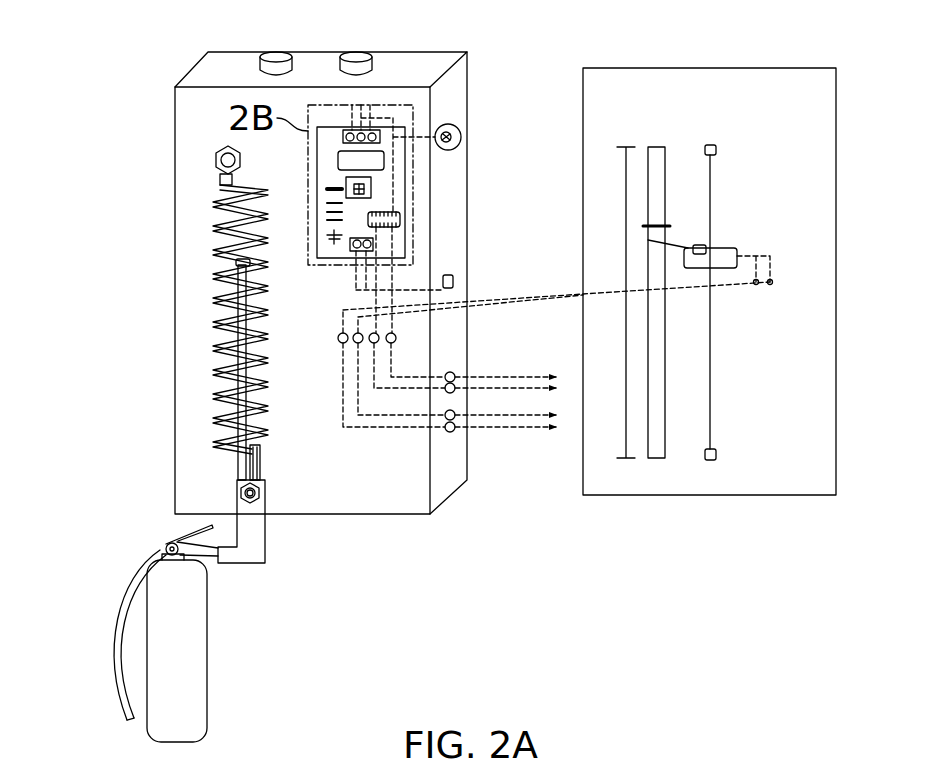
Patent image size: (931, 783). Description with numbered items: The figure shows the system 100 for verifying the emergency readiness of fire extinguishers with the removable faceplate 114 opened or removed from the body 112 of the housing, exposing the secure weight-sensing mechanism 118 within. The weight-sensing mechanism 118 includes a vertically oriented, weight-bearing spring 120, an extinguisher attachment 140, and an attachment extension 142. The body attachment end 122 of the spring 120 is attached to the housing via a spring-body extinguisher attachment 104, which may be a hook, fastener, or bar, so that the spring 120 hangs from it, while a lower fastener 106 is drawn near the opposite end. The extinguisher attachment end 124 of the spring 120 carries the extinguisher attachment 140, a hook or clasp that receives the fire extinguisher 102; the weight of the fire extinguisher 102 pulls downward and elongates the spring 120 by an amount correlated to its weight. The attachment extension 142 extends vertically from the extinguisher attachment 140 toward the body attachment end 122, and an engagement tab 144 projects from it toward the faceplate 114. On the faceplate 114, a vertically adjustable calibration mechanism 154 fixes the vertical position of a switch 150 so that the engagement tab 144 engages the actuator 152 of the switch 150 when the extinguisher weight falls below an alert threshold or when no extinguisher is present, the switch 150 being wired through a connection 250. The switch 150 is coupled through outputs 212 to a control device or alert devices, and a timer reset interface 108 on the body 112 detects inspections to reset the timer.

The system 100 is at (135, 33).
The fire extinguisher 102 is at (208, 640).
The spring-body extinguisher attachment 104 is at (217, 157).
The lower mounting nut 106 is at (243, 491).
The timer reset interface 108 is at (461, 137).
The body 112 is at (402, 516).
The removable faceplate 114 is at (693, 67).
The secure weight-sensing mechanism 118 is at (195, 265).
The spring 120 is at (213, 296).
The body attachment end 122 is at (210, 165).
The extinguisher attachment end 124 is at (268, 473).
The extinguisher attachment 140 is at (265, 535).
The attachment extension 142 is at (247, 379).
The engagement tab 144 is at (252, 263).
The switch 150 is at (723, 248).
The actuator 152 is at (676, 236).
The calibration mechanism 154 is at (712, 175).
The outputs 212 is at (495, 431).
The switch connection 250 is at (766, 288).